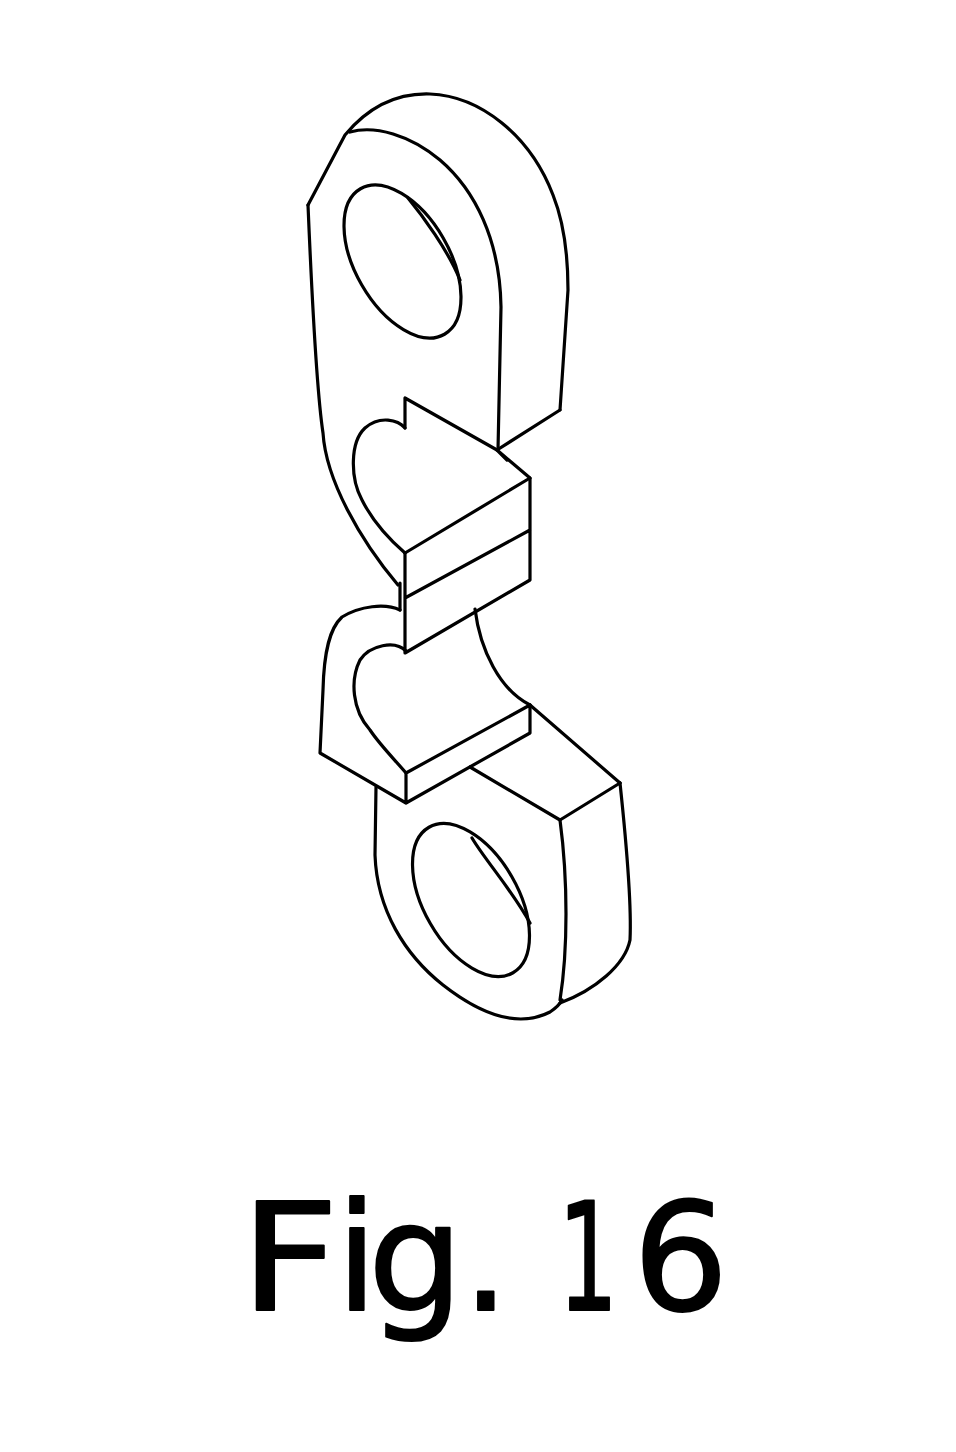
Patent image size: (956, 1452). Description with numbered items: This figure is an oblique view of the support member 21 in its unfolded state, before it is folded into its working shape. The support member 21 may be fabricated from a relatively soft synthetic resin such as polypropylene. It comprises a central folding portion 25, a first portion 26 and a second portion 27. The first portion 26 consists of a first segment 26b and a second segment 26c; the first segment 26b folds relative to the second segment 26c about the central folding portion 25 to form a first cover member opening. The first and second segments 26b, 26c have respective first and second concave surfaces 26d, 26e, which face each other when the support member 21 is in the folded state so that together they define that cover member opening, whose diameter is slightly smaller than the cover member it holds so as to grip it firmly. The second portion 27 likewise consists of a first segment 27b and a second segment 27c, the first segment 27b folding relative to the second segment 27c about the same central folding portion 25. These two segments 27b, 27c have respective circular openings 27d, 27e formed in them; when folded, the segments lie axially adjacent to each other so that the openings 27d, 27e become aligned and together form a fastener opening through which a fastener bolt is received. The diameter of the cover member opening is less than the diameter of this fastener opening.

The support member 21 is at (210, 87).
The central folding portion 25 is at (398, 586).
The first portion 26 is at (547, 539).
The first segment 26b is at (330, 437).
The second segment 26c is at (332, 695).
The first concave surface 26d is at (393, 466).
The second concave surface 26e is at (385, 695).
The second portion 27 is at (692, 688).
The first segment 27b is at (519, 186).
The second segment 27c is at (603, 952).
The circular opening 27d is at (380, 257).
The circular opening 27e is at (455, 918).